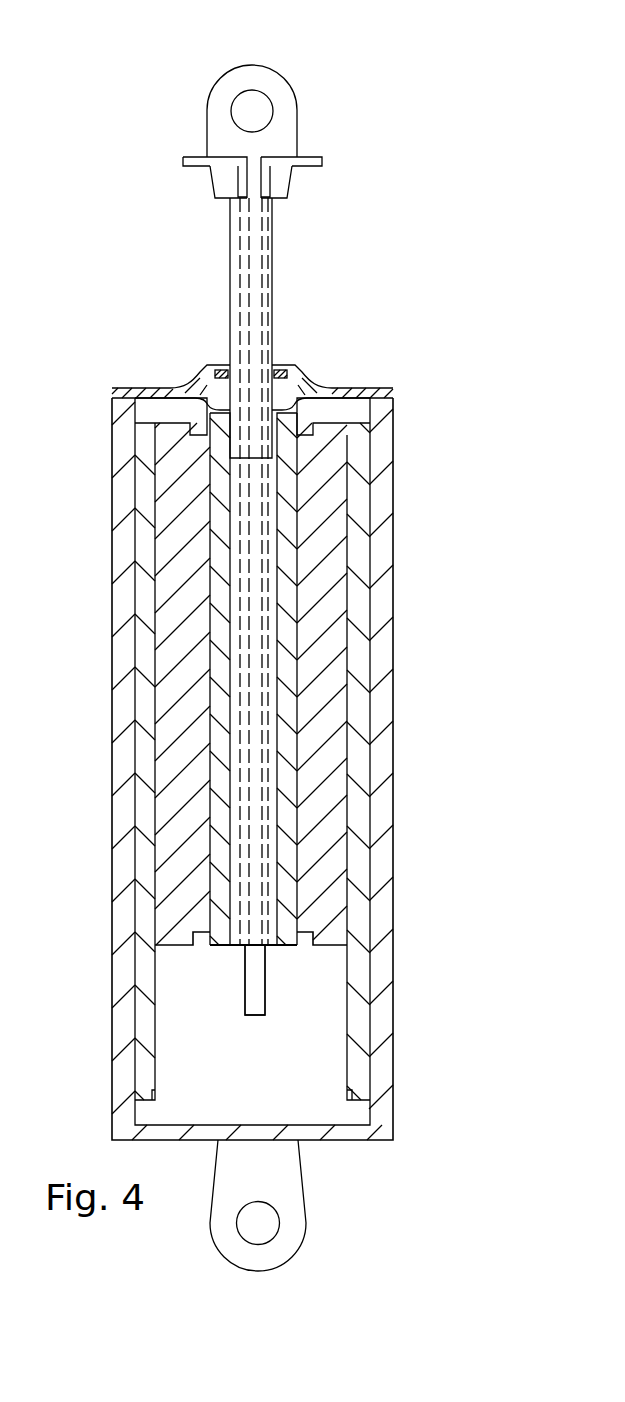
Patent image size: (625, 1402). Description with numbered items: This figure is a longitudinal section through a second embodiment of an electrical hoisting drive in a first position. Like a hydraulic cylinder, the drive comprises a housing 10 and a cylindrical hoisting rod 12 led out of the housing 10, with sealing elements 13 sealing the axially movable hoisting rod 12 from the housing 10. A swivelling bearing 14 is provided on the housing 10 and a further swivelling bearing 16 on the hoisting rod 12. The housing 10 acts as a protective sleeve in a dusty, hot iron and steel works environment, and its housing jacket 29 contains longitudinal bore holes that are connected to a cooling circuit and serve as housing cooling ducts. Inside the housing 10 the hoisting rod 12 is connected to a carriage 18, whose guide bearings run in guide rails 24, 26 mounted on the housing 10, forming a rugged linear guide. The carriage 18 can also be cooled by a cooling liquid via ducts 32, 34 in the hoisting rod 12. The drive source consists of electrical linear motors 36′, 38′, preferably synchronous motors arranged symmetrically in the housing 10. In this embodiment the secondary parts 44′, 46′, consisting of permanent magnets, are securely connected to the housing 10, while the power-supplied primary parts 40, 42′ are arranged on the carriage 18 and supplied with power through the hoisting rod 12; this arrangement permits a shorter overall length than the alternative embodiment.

The housing 10 is at (395, 492).
The hoisting rod 12 is at (258, 257).
The sealing elements 13 is at (275, 367).
The swivelling bearing 14 is at (280, 1192).
The swivelling bearing 16 is at (282, 135).
The carriage 18 is at (283, 619).
The guide rail 24 is at (257, 990).
The guide rail 26 is at (255, 980).
The housing jacket 29 is at (380, 757).
The duct 32 is at (188, 158).
The duct 34 is at (300, 163).
The electrical linear motor 36′ is at (165, 420).
The electrical linear motor 38′ is at (334, 416).
The primary part 40 is at (172, 731).
The primary part 42′ is at (328, 858).
The secondary part 44′ is at (157, 617).
The secondary part 46′ is at (357, 675).